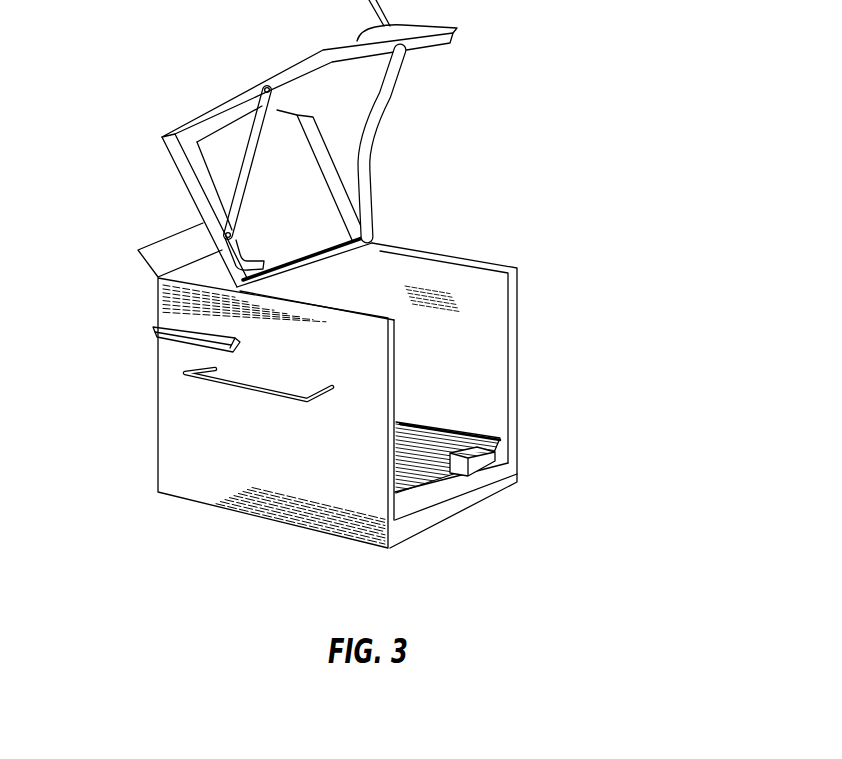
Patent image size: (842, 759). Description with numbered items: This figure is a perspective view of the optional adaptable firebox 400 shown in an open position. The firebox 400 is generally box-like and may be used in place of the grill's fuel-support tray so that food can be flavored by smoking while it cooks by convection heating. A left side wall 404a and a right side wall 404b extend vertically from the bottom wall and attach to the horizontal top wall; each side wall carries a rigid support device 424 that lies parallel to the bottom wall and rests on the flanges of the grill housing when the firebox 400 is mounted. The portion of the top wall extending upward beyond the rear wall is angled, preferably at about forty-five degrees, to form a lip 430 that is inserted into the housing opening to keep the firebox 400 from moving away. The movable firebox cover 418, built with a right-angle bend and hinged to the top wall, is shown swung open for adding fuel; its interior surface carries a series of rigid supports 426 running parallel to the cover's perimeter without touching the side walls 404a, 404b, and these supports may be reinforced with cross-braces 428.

The adaptable firebox 400 is at (399, 274).
The firebox cover 418 is at (163, 137).
The rigid support device 424 is at (151, 327).
The rigid supports 426 is at (392, 57).
The cross-braces 428 is at (360, 160).
The lip 430 is at (148, 243).
The left side wall 404a is at (187, 417).
The right side wall 404b is at (487, 352).